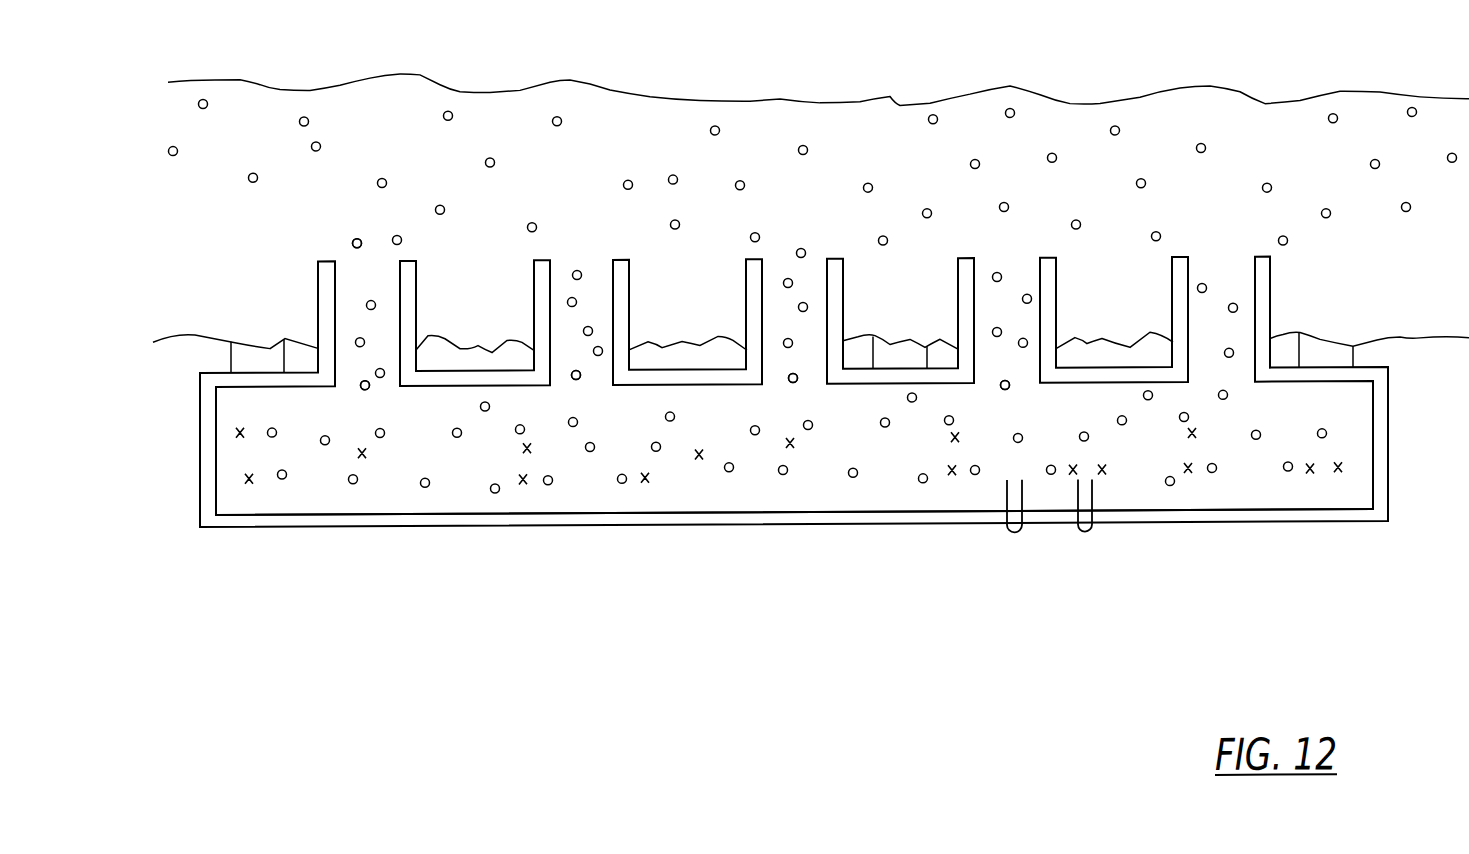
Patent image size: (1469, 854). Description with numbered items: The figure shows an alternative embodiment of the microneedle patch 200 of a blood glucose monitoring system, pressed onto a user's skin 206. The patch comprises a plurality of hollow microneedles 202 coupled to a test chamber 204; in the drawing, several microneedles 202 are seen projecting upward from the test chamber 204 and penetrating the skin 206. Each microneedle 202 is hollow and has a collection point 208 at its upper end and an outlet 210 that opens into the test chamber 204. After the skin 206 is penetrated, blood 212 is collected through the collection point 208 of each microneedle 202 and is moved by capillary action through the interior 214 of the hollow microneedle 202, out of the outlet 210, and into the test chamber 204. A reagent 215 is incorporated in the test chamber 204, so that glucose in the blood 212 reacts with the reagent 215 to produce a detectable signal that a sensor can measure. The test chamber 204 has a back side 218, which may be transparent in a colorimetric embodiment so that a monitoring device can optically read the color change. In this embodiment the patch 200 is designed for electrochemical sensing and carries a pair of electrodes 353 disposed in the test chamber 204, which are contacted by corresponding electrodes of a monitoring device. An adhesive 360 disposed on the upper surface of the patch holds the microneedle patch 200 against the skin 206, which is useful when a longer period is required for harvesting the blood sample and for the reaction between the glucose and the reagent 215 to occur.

The microneedle patch 200 is at (273, 671).
The hollow microneedles 202 is at (318, 299).
The test chamber 204 is at (1389, 436).
The user's skin 206 is at (1186, 90).
The collection point 208 is at (345, 250).
The outlet 210 is at (343, 392).
The blood 212 is at (383, 177).
The interior 214 is at (1016, 294).
The reagent 215 is at (255, 486).
The back side 218 is at (1188, 518).
The pair of electrodes 353 is at (1078, 534).
The adhesive 360 is at (231, 357).